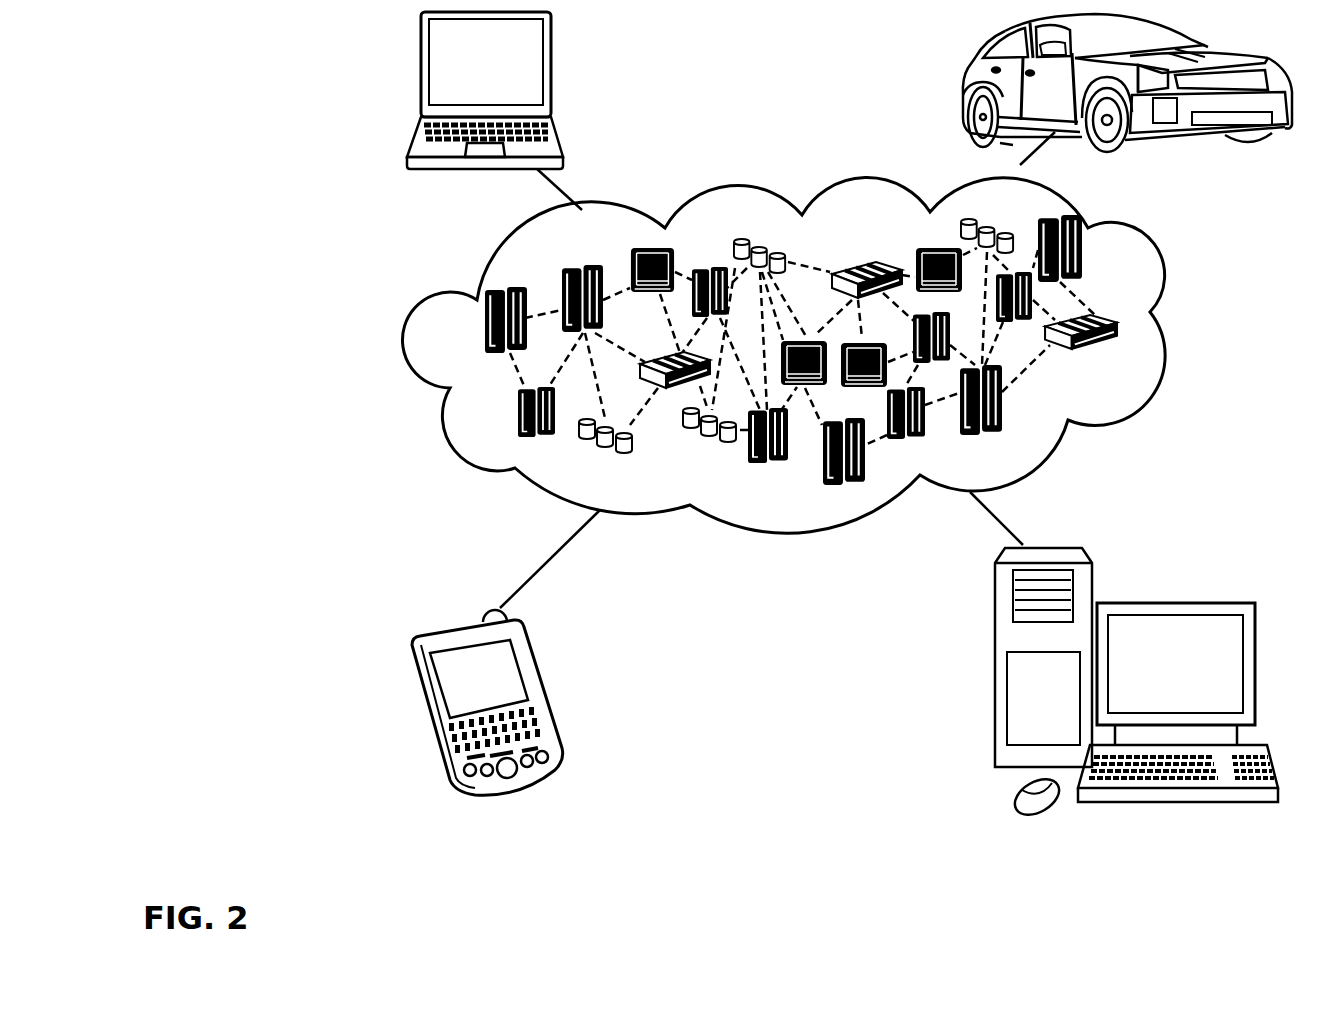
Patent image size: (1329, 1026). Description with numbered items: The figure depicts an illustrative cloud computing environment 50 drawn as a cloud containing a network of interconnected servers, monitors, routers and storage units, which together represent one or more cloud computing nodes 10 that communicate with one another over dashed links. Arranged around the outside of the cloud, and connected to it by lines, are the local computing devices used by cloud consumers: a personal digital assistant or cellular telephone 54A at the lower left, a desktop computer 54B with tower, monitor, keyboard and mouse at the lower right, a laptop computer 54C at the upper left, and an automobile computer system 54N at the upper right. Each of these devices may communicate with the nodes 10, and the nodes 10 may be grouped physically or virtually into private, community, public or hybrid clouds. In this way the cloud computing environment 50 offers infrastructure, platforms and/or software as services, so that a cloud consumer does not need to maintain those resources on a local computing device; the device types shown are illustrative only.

The cloud computing node 10 is at (1118, 356).
The cloud computing environment 50 is at (817, 356).
The personal digital assistant (PDA) or cellular telephone 54A is at (543, 690).
The desktop computer 54B is at (1173, 603).
The laptop computer 54C is at (552, 70).
The automobile computer system 54N is at (966, 84).